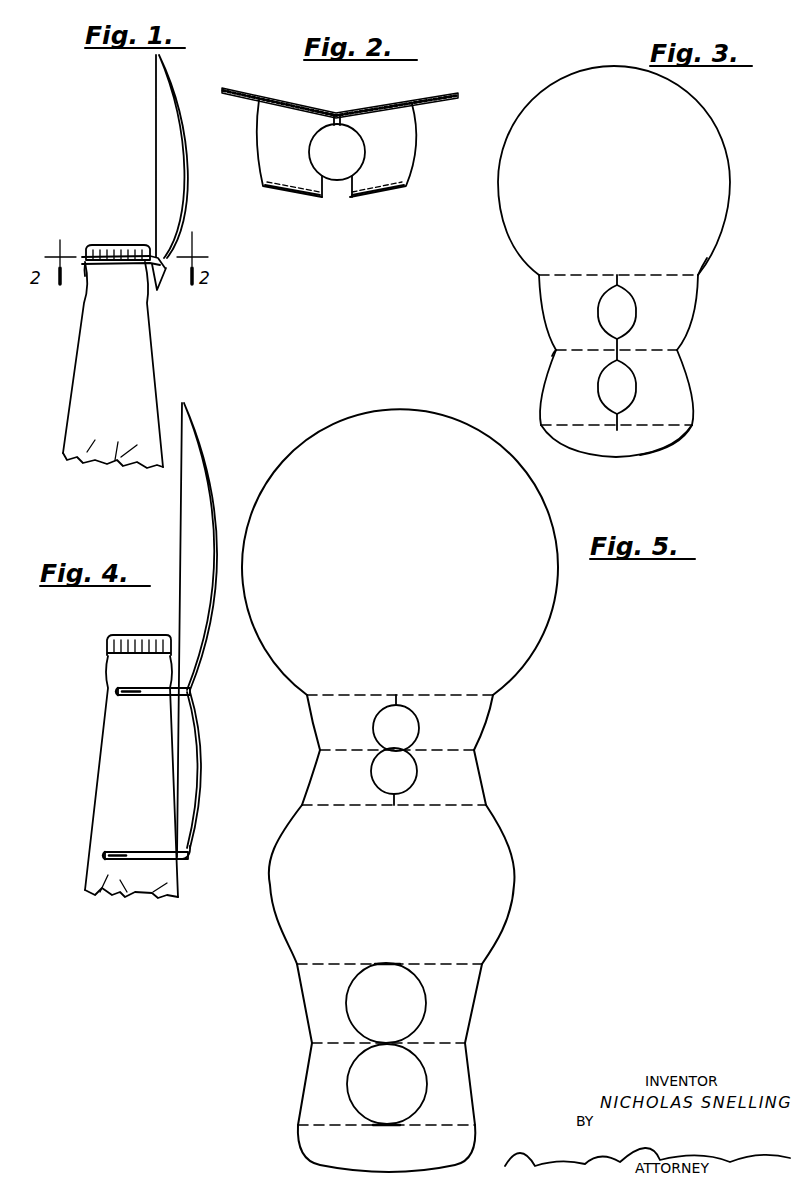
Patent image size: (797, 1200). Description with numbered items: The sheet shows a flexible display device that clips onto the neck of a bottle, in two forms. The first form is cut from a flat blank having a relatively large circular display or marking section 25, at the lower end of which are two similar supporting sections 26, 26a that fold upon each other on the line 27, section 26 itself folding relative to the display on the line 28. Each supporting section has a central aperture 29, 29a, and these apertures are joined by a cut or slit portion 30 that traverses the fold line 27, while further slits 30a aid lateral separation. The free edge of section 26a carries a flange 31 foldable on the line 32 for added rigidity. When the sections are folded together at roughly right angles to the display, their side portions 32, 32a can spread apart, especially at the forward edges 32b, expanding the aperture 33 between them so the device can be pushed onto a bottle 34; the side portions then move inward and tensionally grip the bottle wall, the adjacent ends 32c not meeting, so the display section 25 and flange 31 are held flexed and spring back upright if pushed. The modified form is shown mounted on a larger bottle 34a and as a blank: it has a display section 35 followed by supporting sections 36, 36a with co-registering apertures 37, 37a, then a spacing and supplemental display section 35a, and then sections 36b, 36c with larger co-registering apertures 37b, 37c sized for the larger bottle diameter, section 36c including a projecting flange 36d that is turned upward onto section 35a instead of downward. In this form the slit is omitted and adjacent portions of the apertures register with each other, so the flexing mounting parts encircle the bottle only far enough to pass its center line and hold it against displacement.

In FIG. 1, the display or marking section 25 is at (184, 172).
In FIG. 2, the display or marking section 25 is at (392, 105).
In FIG. 3, the display or marking section 25 is at (725, 186).
In FIG. 1, the supporting section 26 is at (152, 257).
In FIG. 3, the supporting section 26 is at (692, 305).
In FIG. 1, the supporting section 26a is at (143, 262).
In FIG. 3, the supporting section 26a is at (692, 390).
In FIG. 3, the fold line 27 is at (672, 350).
In FIG. 3, the fold line 28 is at (680, 277).
In FIG. 3, the aperture 29 is at (598, 312).
In FIG. 3, the aperture 29a is at (598, 387).
In FIG. 3, the cut or slit portion 30 is at (605, 353).
In FIG. 3, the slit or cut 30a is at (616, 278).
In FIG. 1, the flange 31 is at (159, 288).
In FIG. 3, the flange 31 is at (655, 443).
In FIG. 2, the fold line / side portion 32 is at (259, 178).
In FIG. 3, the fold line / side portion 32 is at (672, 425).
In FIG. 2, the side portion 32a is at (410, 182).
In FIG. 2, the forward edge 32b is at (386, 198).
In FIG. 2, the adjacent end 32c is at (325, 198).
In FIG. 2, the aperture 33 is at (362, 152).
In FIG. 1, the bottle 34 is at (156, 361).
In FIG. 4, the bottle 34a is at (88, 806).
In FIG. 4, the display section 35 is at (210, 478).
In FIG. 5, the display section 35 is at (557, 600).
In FIG. 4, the spacing and supplemental display section 35a is at (206, 798).
In FIG. 5, the spacing and supplemental display section 35a is at (514, 878).
In FIG. 4, the supporting section 36 is at (157, 690).
In FIG. 5, the supporting section 36 is at (489, 719).
In FIG. 4, the supporting section 36a is at (152, 698).
In FIG. 5, the supporting section 36a is at (485, 783).
In FIG. 4, the supporting section 36b is at (125, 853).
In FIG. 5, the supporting section 36b is at (478, 1004).
In FIG. 4, the supporting section 36c is at (145, 862).
In FIG. 5, the supporting section 36c is at (470, 1076).
In FIG. 4, the projecting flange 36d is at (197, 848).
In FIG. 5, the projecting flange 36d is at (468, 1156).
In FIG. 5, the aperture 37 is at (374, 723).
In FIG. 5, the aperture 37a is at (372, 772).
In FIG. 5, the aperture 37b is at (348, 1004).
In FIG. 5, the aperture 37c is at (348, 1083).